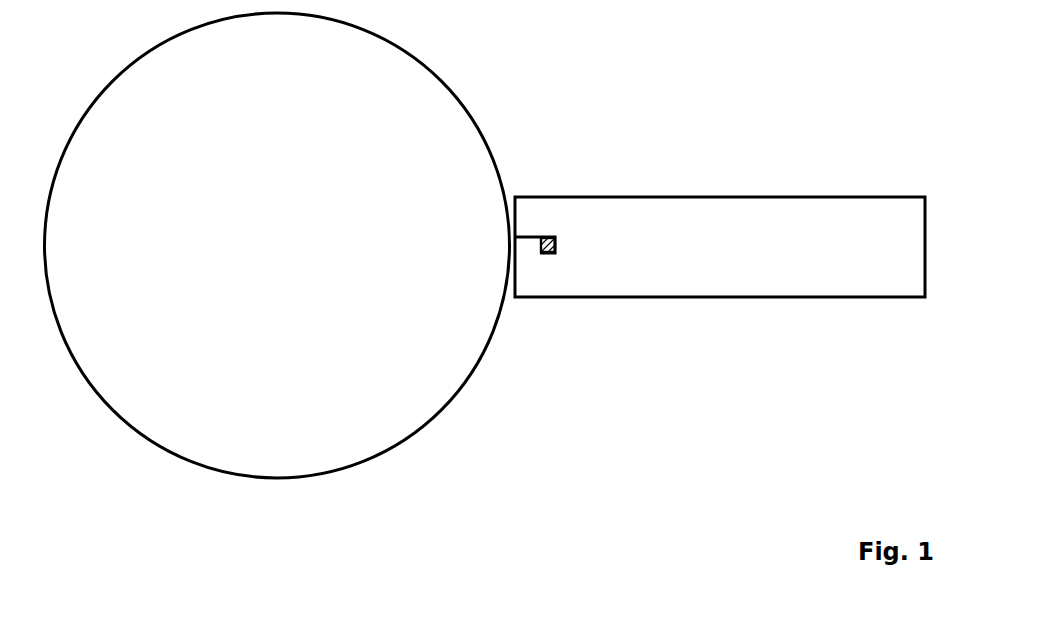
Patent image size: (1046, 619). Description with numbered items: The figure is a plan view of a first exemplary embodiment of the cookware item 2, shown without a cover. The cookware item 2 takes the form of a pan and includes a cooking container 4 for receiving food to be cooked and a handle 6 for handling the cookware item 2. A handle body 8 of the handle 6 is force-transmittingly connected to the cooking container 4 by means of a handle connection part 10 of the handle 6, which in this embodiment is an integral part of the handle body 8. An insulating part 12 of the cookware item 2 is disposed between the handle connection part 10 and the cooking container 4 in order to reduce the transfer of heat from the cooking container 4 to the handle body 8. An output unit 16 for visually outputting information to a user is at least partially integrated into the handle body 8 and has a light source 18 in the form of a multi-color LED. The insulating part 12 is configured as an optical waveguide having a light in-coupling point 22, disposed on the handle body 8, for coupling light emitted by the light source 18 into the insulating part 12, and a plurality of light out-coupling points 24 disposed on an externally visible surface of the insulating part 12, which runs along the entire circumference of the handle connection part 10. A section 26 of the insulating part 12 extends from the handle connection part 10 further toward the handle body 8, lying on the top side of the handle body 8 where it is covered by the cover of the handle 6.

The cookware item 2 is at (77, 443).
The cooking container 4 is at (152, 400).
The handle 6 is at (702, 413).
The handle body 8 is at (765, 282).
The handle connection part 10 is at (484, 311).
The insulating part 12 is at (510, 222).
The output unit 16 is at (560, 317).
The light source 18 is at (545, 245).
The light in-coupling point 22 is at (532, 266).
The light out-coupling points 24 is at (506, 271).
The section 26 is at (529, 243).